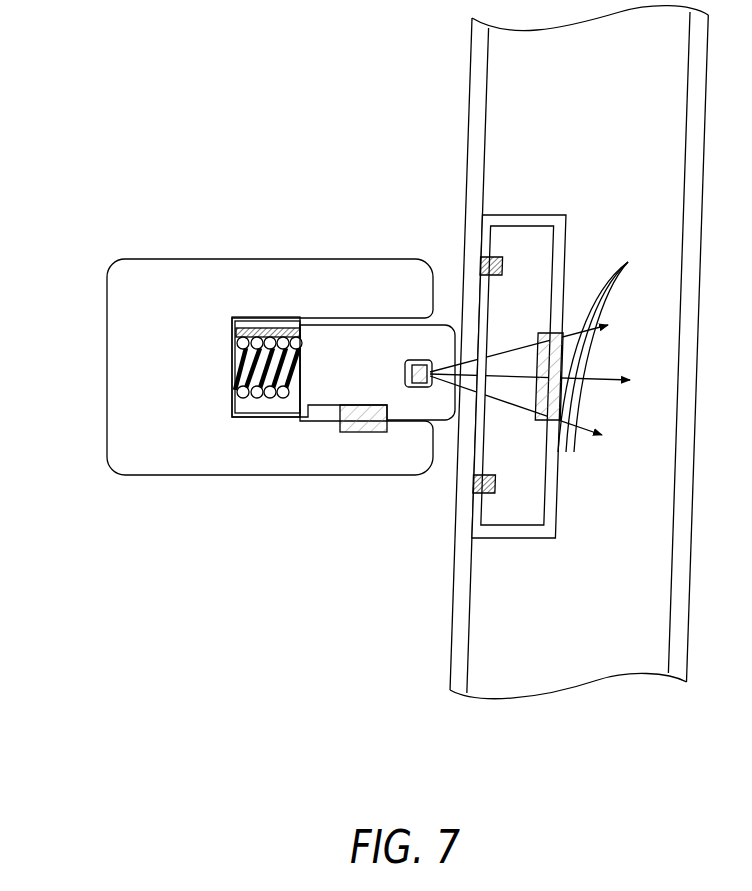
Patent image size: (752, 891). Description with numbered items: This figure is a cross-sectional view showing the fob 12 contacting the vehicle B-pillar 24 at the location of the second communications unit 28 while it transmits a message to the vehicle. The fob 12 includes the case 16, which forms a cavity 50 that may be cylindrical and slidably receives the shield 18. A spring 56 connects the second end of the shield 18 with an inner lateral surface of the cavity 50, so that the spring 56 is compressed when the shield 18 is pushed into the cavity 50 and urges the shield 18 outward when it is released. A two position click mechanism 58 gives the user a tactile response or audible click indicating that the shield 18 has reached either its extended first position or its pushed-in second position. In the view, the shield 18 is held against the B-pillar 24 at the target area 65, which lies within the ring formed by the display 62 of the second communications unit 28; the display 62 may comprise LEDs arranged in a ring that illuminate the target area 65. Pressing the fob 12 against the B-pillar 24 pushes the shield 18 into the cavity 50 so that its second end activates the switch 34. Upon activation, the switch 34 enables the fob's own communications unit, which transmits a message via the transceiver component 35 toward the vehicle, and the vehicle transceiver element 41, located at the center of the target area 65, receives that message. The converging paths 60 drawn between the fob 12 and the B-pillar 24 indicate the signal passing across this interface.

The fob 12 is at (244, 359).
The case 16 is at (120, 474).
The shield 18 is at (449, 322).
The B-pillar 24 is at (466, 113).
The second communications unit 28 is at (566, 245).
The switch 34 is at (287, 322).
The transceiver component 35 is at (418, 380).
The transceiver element 41 is at (543, 335).
The cavity 50 is at (283, 413).
The spring 56 is at (257, 397).
The two position click mechanism 58 is at (352, 422).
The signal paths 60 is at (608, 350).
The display 62 is at (497, 258).
The target area 65 is at (470, 457).